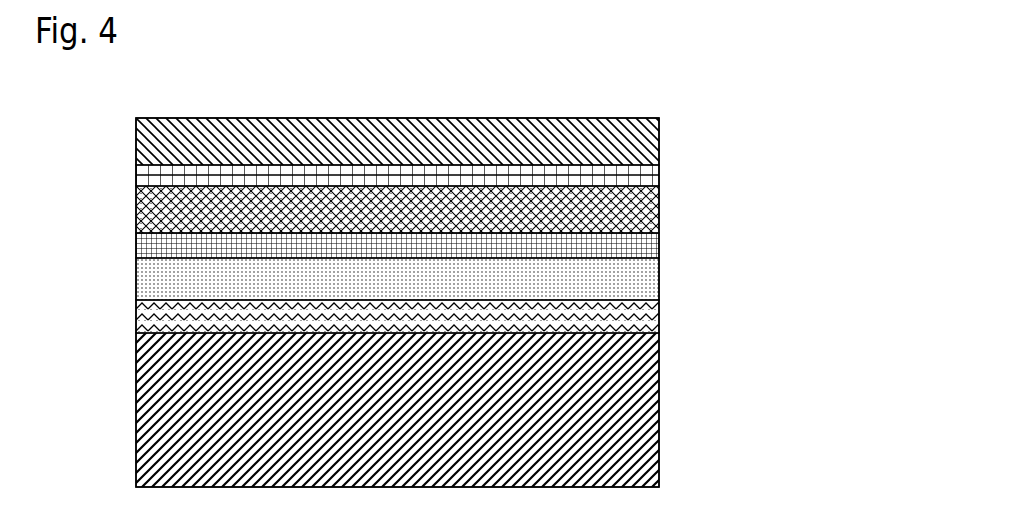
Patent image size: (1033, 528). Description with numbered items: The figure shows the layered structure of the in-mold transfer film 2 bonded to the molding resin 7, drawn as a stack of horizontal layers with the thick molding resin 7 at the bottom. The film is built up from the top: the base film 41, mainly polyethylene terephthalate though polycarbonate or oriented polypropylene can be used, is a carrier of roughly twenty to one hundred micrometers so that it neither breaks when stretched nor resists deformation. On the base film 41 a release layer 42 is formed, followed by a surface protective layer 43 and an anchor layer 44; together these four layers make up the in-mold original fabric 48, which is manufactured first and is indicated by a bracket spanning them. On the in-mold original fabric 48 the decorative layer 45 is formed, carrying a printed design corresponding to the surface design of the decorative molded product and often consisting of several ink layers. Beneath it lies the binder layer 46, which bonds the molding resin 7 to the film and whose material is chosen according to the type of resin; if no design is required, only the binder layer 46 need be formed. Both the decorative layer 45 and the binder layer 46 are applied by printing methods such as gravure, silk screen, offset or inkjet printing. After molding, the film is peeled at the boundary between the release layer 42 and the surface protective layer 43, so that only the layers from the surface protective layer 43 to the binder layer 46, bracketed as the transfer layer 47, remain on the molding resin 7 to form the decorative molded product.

The in-mold transfer film 2 is at (882, 100).
The molding resin 7 is at (618, 385).
The base film 41 is at (618, 147).
The release layer 42 is at (618, 177).
The surface protective layer 43 is at (618, 220).
The anchor layer 44 is at (618, 248).
The decorative layer 45 is at (618, 283).
The binder layer 46 is at (618, 318).
The transfer layer 47 is at (768, 188).
The in-mold original fabric 48 is at (772, 102).